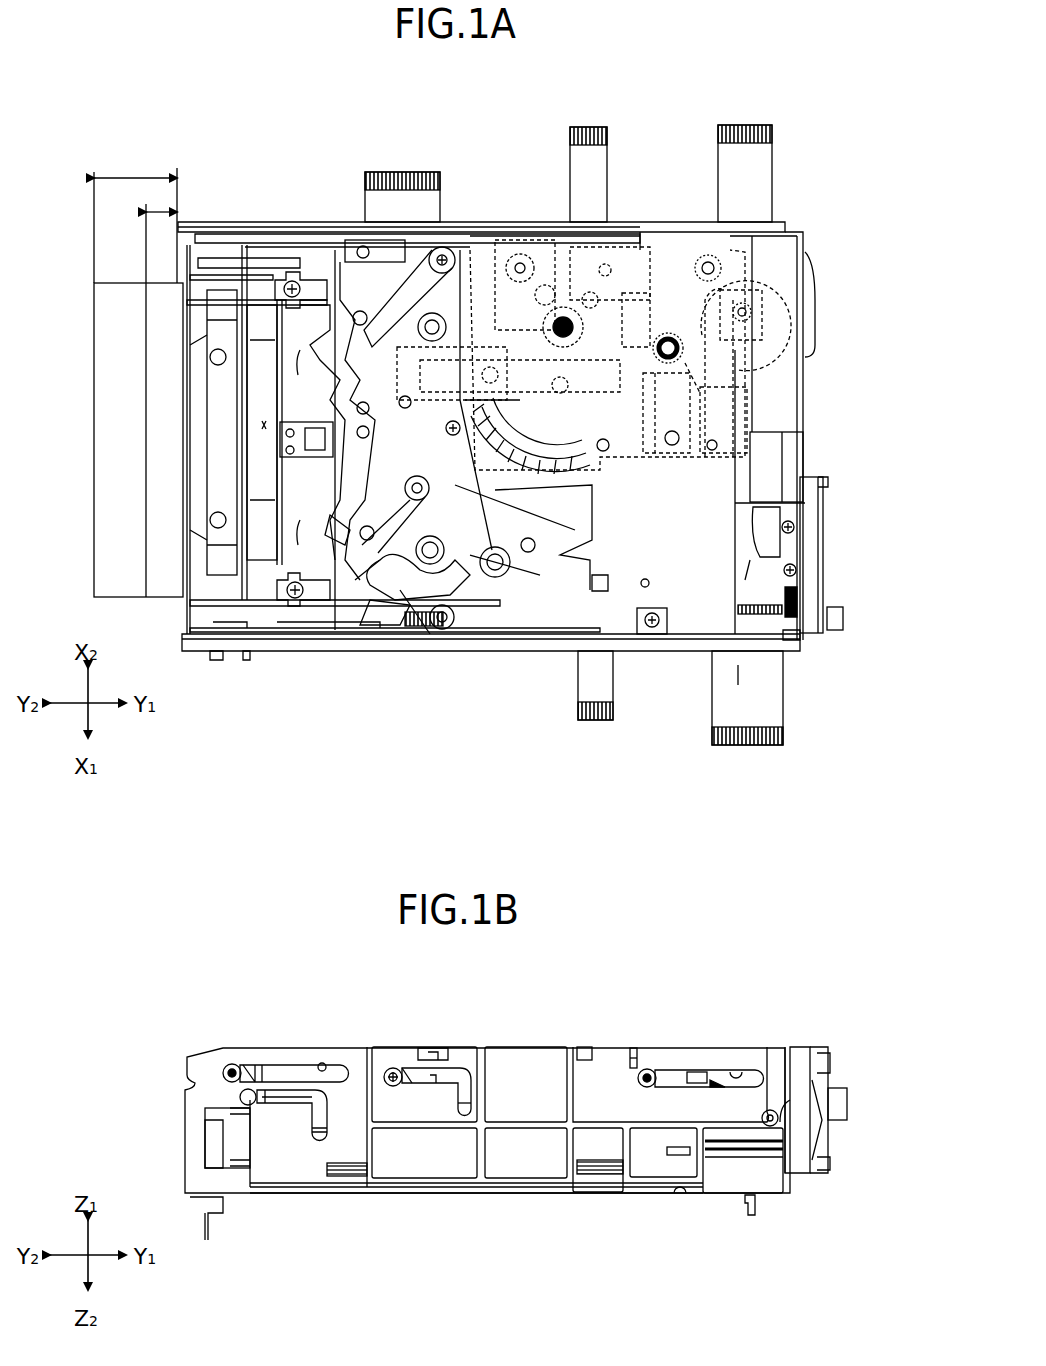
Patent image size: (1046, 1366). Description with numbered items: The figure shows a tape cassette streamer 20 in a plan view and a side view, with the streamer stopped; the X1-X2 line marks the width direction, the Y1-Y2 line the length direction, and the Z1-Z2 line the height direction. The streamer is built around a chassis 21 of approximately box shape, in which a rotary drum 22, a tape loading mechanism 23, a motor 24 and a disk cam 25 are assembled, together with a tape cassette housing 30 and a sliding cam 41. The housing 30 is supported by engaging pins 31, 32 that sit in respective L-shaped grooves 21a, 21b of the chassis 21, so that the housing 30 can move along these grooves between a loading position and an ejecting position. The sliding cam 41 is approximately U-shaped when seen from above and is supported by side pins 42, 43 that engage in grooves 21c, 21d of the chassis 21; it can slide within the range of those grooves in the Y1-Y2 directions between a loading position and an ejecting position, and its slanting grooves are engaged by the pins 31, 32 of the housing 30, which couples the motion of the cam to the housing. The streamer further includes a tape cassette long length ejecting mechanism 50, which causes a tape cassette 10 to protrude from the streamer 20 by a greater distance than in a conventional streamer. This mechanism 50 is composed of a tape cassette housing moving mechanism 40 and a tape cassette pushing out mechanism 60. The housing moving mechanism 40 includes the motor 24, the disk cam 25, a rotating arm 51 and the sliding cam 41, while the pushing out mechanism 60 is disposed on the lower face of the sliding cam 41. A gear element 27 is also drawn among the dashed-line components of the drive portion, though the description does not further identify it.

In FIG. 1A, the tape cassette 10 is at (158, 380).
In FIG. 1A, the tape cassette streamer 20 is at (726, 95).
In FIG. 1B, the tape cassette streamer 20 is at (730, 983).
In FIG. 1A, the chassis 21 is at (752, 223).
In FIG. 1B, the chassis 21 is at (556, 1046).
In FIG. 1B, the L-shaped groove 21a is at (280, 1103).
In FIG. 1B, the L-shaped groove 21b is at (468, 1068).
In FIG. 1B, the groove 21c is at (744, 1068).
In FIG. 1B, the groove 21d is at (328, 1066).
In FIG. 1A, the rotary drum 22 is at (502, 470).
In FIG. 1A, the tape loading mechanism 23 is at (267, 470).
In FIG. 1A, the motor 24 is at (778, 449).
In FIG. 1A, the disk cam 25 is at (778, 295).
In FIG. 1A, the gear 27 is at (708, 262).
In FIG. 1A, the tape cassette housing 30 is at (238, 290).
In FIG. 1B, the engaging pin 31 is at (240, 1098).
In FIG. 1B, the engaging pin 32 is at (393, 1066).
In FIG. 1A, the tape cassette housing moving mechanism 40 is at (535, 224).
In FIG. 1A, the sliding cam 41 is at (725, 483).
In FIG. 1B, the side pin 42 is at (650, 1066).
In FIG. 1B, the side pin 43 is at (231, 1064).
In FIG. 1A, the tape cassette long length ejecting mechanism 50 is at (551, 125).
In FIG. 1A, the rotating arm 51 is at (705, 354).
In FIG. 1A, the tape cassette pushing out mechanism 60 is at (481, 262).